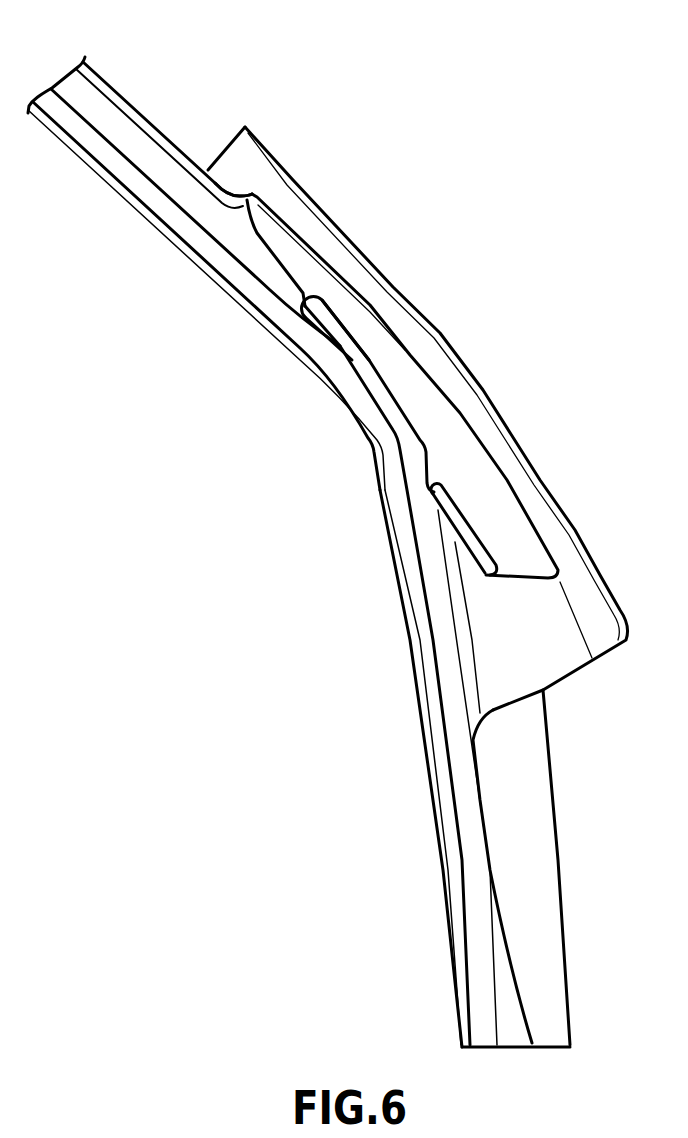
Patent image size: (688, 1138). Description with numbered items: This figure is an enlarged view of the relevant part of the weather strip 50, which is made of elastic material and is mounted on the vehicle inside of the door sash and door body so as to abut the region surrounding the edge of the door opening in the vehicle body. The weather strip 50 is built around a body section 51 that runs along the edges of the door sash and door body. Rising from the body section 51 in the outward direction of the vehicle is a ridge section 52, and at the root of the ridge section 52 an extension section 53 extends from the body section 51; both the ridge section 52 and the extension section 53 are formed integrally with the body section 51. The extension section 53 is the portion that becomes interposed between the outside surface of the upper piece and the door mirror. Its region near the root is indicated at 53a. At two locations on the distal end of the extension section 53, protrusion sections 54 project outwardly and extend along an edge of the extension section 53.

The weather strip 50 is at (466, 214).
The body section 51 is at (108, 184).
The ridge section 52 is at (483, 387).
The extension section 53 is at (427, 462).
The bent end portion of ridge 53a is at (248, 194).
The protrusion section 54 is at (323, 323).